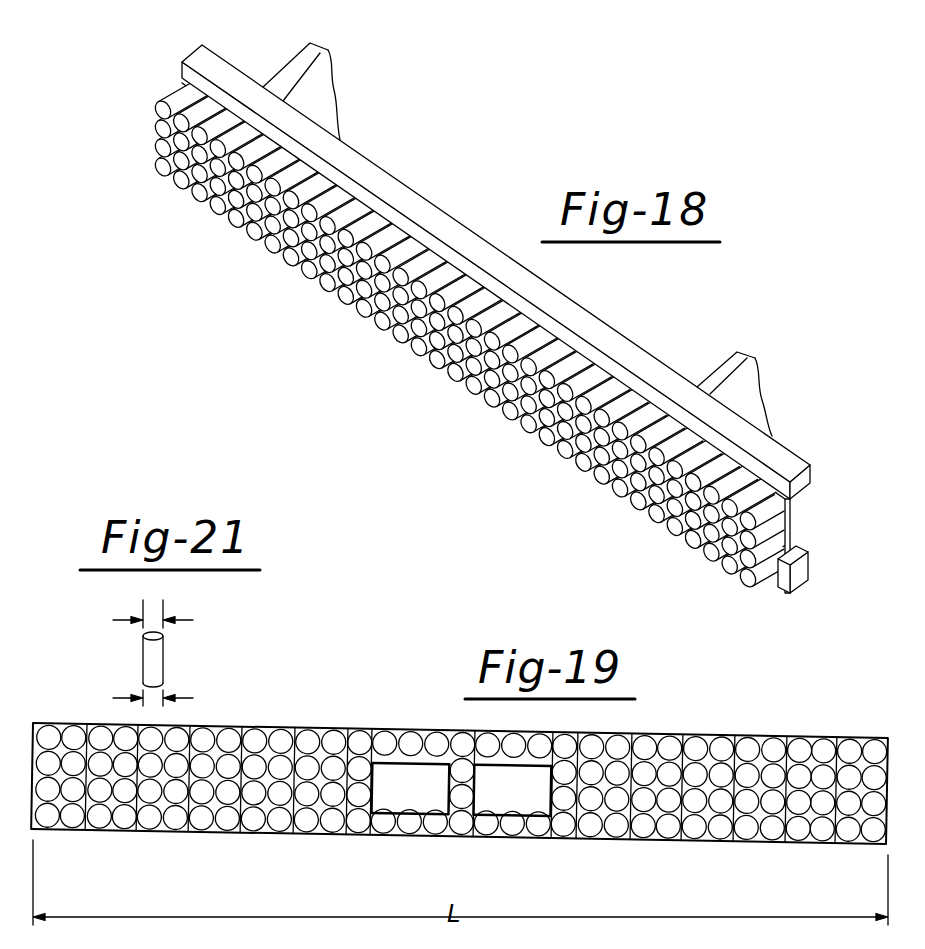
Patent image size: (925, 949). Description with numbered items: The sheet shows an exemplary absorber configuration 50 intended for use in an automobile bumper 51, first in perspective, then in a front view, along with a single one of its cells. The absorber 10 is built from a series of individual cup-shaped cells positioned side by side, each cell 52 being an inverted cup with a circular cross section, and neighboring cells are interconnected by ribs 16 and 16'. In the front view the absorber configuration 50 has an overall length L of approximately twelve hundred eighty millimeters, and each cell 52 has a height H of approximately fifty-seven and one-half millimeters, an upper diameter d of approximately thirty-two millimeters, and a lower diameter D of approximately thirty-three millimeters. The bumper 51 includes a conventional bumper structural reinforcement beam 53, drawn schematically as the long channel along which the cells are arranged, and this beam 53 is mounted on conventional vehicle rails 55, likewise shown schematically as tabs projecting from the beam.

In FIG. 19, the absorber 10 is at (622, 737).
In FIG. 19, the rib 16 is at (398, 701).
In FIG. 19, the rib 16' is at (324, 709).
In FIG. 18, the absorber configuration 50 is at (405, 382).
In FIG. 19, the absorber configuration 50 is at (767, 724).
In FIG. 18, the automobile bumper 51 is at (590, 306).
In FIG. 21, the cell 52 is at (178, 656).
In FIG. 18, the bumper structural reinforcement beam 53 is at (648, 370).
In FIG. 18, the vehicle rails 55 is at (312, 44).